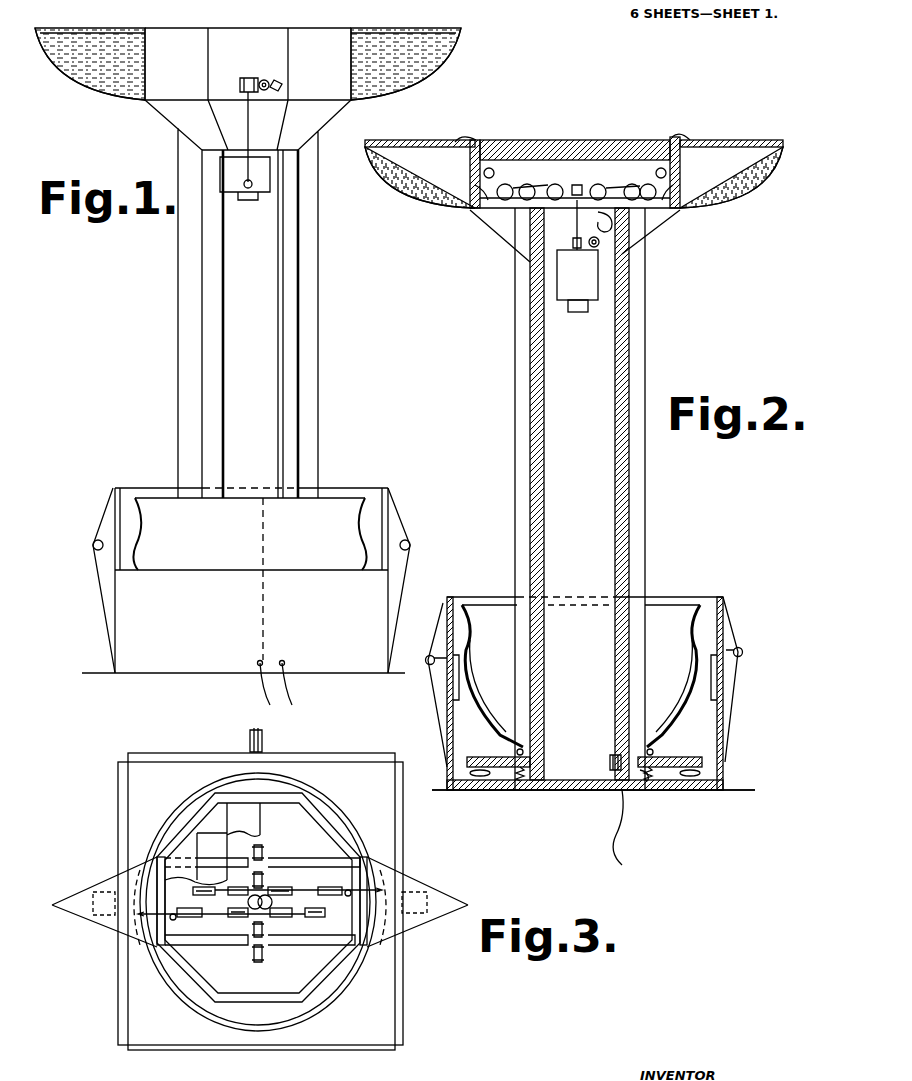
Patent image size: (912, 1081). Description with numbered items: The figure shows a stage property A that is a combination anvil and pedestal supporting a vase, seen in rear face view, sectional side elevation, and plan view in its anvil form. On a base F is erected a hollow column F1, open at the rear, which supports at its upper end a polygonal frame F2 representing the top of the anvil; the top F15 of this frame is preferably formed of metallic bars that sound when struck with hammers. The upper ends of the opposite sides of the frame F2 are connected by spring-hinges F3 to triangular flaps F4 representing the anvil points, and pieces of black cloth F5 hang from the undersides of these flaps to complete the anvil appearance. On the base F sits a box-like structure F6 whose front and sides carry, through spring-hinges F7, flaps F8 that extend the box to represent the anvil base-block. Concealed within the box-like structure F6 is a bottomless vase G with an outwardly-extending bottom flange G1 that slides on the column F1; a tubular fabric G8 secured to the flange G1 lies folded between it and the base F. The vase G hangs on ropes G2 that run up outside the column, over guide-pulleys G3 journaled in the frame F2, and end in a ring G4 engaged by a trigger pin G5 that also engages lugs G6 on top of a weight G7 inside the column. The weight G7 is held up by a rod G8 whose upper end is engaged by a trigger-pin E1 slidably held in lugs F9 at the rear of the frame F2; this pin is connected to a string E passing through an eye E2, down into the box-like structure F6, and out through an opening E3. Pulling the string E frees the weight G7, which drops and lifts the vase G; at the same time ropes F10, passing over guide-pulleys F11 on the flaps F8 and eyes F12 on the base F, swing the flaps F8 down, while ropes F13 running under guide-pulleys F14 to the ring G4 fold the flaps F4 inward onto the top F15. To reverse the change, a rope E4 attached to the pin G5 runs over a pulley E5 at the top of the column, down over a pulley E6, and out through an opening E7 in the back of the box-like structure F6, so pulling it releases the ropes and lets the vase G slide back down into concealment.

In FIG. 1, the stage property A is at (250, 353).
In FIG. 2, the stage property A is at (575, 440).
In FIG. 3, the stage property A is at (262, 890).
In FIG. 1, the string E is at (278, 341).
In FIG. 1, the trigger-pin E1 is at (240, 85).
In FIG. 1, the eye E2 is at (284, 84).
In FIG. 1, the opening E3 is at (257, 662).
In FIG. 1, the rope E4 is at (292, 691).
In FIG. 2, the rope E4 is at (629, 406).
In FIG. 2, the pulley E5 is at (602, 242).
In FIG. 2, the pulley E6 is at (610, 764).
In FIG. 1, the opening E7 is at (284, 662).
In FIG. 2, the base F is at (572, 792).
In FIG. 3, the base F is at (343, 1050).
In FIG. 1, the column F1 is at (298, 373).
In FIG. 2, the column F1 is at (544, 504).
In FIG. 1, the polygonal frame F2 is at (248, 89).
In FIG. 2, the polygonal frame F2 is at (476, 212).
In FIG. 3, the polygonal frame F2 is at (322, 818).
In FIG. 2, the spring-hinges F3 is at (476, 140).
In FIG. 3, the spring-hinges F3 is at (260, 828).
In FIG. 1, the triangular flaps F4 is at (52, 36).
In FIG. 2, the triangular flaps F4 is at (420, 138).
In FIG. 3, the triangular flaps F4 is at (100, 918).
In FIG. 1, the pieces of black cloth F5 is at (96, 70).
In FIG. 2, the pieces of black cloth F5 is at (410, 178).
In FIG. 1, the box-like structure F6 is at (243, 580).
In FIG. 2, the box-like structure F6 is at (447, 750).
In FIG. 2, the spring-hinges F7 is at (470, 676).
In FIG. 1, the flaps F8 is at (113, 513).
In FIG. 2, the flaps F8 is at (445, 615).
In FIG. 1, the lugs F9 is at (262, 79).
In FIG. 2, the rope F10 is at (447, 680).
In FIG. 2, the guide-pulley F11 is at (426, 652).
In FIG. 2, the eye F12 is at (537, 792).
In FIG. 2, the rope F13 is at (484, 173).
In FIG. 3, the rope F13 is at (202, 946).
In FIG. 2, the guide-pulleys F14 is at (599, 181).
In FIG. 3, the guide-pulleys F14 is at (330, 882).
In FIG. 2, the top F15 is at (594, 142).
In FIG. 1, the vase G is at (318, 560).
In FIG. 2, the vase G is at (678, 612).
In FIG. 3, the vase G is at (345, 990).
In FIG. 2, the bottom flange G1 is at (692, 757).
In FIG. 2, the ropes G2 is at (515, 527).
In FIG. 3, the ropes G2 is at (290, 920).
In FIG. 2, the guide-pulleys G3 is at (554, 190).
In FIG. 3, the guide-pulleys G3 is at (224, 882).
In FIG. 2, the ring G4 is at (572, 238).
In FIG. 2, the pin G5 is at (620, 250).
In FIG. 2, the lugs G6 is at (577, 275).
In FIG. 2, the weight G7 is at (580, 312).
In FIG. 1, the rod G8 is at (248, 126).
In FIG. 2, the rod G8 is at (520, 782).